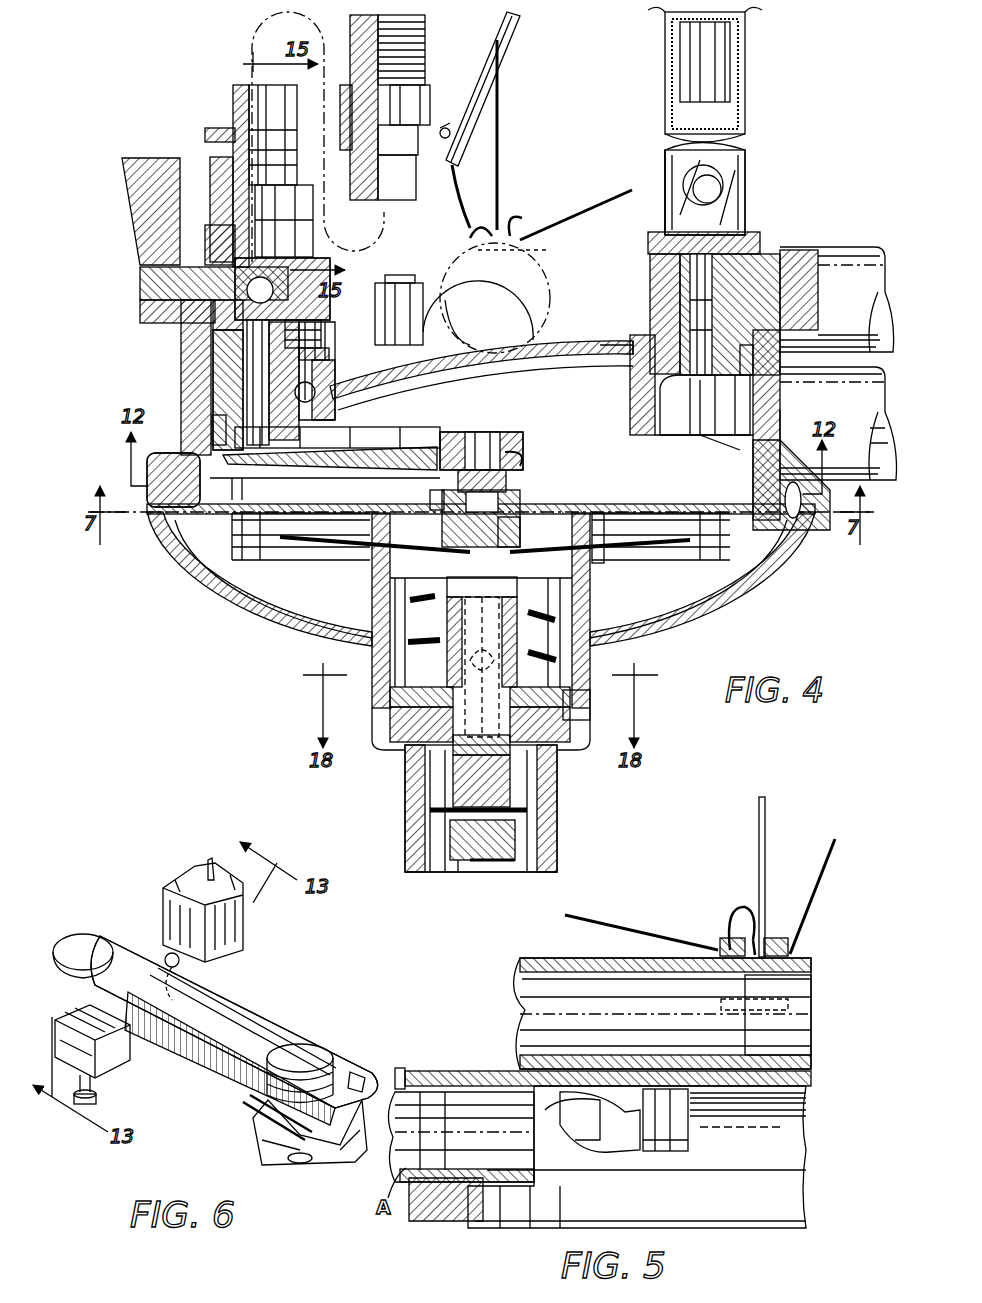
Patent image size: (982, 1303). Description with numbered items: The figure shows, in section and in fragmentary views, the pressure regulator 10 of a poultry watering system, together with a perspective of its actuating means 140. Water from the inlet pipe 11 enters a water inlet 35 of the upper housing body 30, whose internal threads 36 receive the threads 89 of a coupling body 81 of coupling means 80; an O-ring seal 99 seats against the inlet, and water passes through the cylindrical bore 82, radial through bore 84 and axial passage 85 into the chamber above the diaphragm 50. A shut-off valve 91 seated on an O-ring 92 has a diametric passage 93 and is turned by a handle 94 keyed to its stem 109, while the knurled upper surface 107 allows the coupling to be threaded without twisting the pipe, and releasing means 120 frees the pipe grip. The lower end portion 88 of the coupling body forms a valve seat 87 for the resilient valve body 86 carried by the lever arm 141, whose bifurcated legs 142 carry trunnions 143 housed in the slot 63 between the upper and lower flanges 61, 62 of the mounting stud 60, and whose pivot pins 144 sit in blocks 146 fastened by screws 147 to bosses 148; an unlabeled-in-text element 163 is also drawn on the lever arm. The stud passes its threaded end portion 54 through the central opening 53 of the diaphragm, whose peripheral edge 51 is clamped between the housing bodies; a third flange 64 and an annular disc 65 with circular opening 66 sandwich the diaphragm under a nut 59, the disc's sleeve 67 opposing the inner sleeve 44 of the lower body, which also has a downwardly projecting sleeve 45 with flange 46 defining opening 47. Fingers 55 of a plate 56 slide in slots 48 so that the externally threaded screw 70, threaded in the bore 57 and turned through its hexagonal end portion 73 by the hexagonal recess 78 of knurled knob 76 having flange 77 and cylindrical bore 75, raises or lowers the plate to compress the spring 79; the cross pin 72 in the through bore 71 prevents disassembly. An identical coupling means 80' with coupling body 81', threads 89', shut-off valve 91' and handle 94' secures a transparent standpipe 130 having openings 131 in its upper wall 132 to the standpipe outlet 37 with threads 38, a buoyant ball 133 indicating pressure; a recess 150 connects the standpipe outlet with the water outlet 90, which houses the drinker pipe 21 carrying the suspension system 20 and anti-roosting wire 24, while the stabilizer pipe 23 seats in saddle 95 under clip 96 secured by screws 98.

In FIG. 4, the pressure regulator 10 is at (760, 132).
In FIG. 4, the water inlet pipe 11 is at (248, 100).
In FIG. 4, the suspension system 20 is at (514, 55).
In FIG. 5, the suspension system 20 is at (768, 815).
In FIG. 4, the drinker pipe 21 is at (870, 446).
In FIG. 5, the drinker pipe 21 is at (499, 1135).
In FIG. 4, the stabilizer pipe 23 is at (862, 316).
In FIG. 5, the stabilizer pipe 23 is at (604, 1024).
In FIG. 4, the anti-roosting wire 24 is at (562, 214).
In FIG. 5, the anti-roosting wire 24 is at (624, 936).
In FIG. 4, the upper housing body 30 is at (612, 362).
In FIG. 5, the upper housing body 30 is at (820, 1082).
In FIG. 4, the water inlet 35 is at (328, 368).
In FIG. 4, the internal threads 36 is at (227, 390).
In FIG. 4, the standpipe outlet 37 is at (776, 406).
In FIG. 5, the standpipe outlet 37 is at (672, 1148).
In FIG. 4, the internal threads 38 is at (778, 380).
In FIG. 4, the inner upwardly projecting sleeve 44 is at (374, 594).
In FIG. 4, the downwardly projecting annular sleeve 45 is at (385, 742).
In FIG. 4, the radially inwardly directed flange 46 is at (392, 755).
In FIG. 4, the circular opening 47 is at (410, 778).
In FIG. 4, the slots 48 is at (506, 652).
In FIG. 4, the diaphragm 50 is at (576, 508).
In FIG. 4, the peripheral edge 51 is at (798, 522).
In FIG. 4, the central circular opening 53 is at (440, 500).
In FIG. 4, the threaded end portion 54 is at (462, 570).
In FIG. 4, the fingers 55 is at (522, 672).
In FIG. 4, the plate 56 is at (580, 716).
In FIG. 4, the centrally threaded bore 57 is at (481, 745).
In FIG. 4, the nut 59 is at (505, 544).
In FIG. 4, the mounting stud 60 is at (463, 430).
In FIG. 4, the upper peripheral flange 61 is at (504, 434).
In FIG. 4, the lower peripheral flange 62 is at (516, 476).
In FIG. 4, the circumferential slot 63 is at (525, 456).
In FIG. 4, the third flange 64 is at (520, 494).
In FIG. 4, the annular disc 65 is at (655, 556).
In FIG. 4, the circular opening 66 is at (500, 568).
In FIG. 4, the downwardly projecting sleeve 67 is at (385, 560).
In FIG. 4, the externally threaded screw 70 is at (444, 610).
In FIG. 4, the diametric through bore 71 is at (481, 781).
In FIG. 4, the cross pin 72 is at (498, 866).
In FIG. 4, the hexagonal end portion 73 is at (515, 840).
In FIG. 4, the cylindrical bore 75 is at (527, 806).
In FIG. 4, the knurled knob 76 is at (558, 850).
In FIG. 4, the radially outwardly directed flange 77 is at (388, 722).
In FIG. 4, the hexagonal recess 78 is at (458, 872).
In FIG. 4, the spring 79 is at (528, 626).
In FIG. 4, the coupling means 80 is at (307, 285).
In FIG. 4, the coupling means 80' is at (769, 286).
In FIG. 4, the coupling body 81 is at (287, 284).
In FIG. 4, the coupling body 81' is at (717, 227).
In FIG. 4, the cylindrical bore 82 is at (215, 228).
In FIG. 4, the radial through bore 84 is at (182, 324).
In FIG. 4, the axial passage 85 is at (310, 352).
In FIG. 4, the valve body 86 is at (245, 478).
In FIG. 4, the valve seat 87 is at (200, 466).
In FIG. 4, the lower end portion 88 is at (212, 428).
In FIG. 4, the threads 89 is at (228, 375).
In FIG. 4, the threads 89' is at (665, 392).
In FIG. 5, the water outlet 90 is at (470, 1074).
In FIG. 4, the shut-off valve 91 is at (284, 223).
In FIG. 5, the shut-off valve 91 is at (446, 1184).
In FIG. 4, the shut-off valve 91' is at (644, 314).
In FIG. 4, the O-ring 92 is at (321, 326).
In FIG. 4, the diametric passage 93 is at (271, 361).
In FIG. 4, the handle 94 is at (151, 211).
In FIG. 4, the handle 94' is at (816, 290).
In FIG. 4, the saddle 95 is at (428, 280).
In FIG. 5, the saddle 95 is at (766, 1034).
In FIG. 4, the clip 96 is at (542, 254).
In FIG. 5, the clip 96 is at (790, 955).
In FIG. 4, the screws 98 is at (399, 310).
In FIG. 4, the O-ring seal 99 is at (184, 345).
In FIG. 4, the knurled upper exterior surface 107 is at (298, 192).
In FIG. 4, the stem 109 is at (145, 275).
In FIG. 4, the releasing means 120 is at (206, 128).
In FIG. 4, the standpipe 130 is at (748, 80).
In FIG. 4, the openings 131 is at (769, 15).
In FIG. 4, the upper wall 132 is at (642, 19).
In FIG. 4, the buoyant ball 133 is at (718, 180).
In FIG. 4, the actuating means 140 is at (366, 432).
In FIG. 6, the actuating means 140 is at (275, 988).
In FIG. 4, the lever arm 141 is at (390, 460).
In FIG. 6, the lever arm 141 is at (292, 1030).
In FIG. 6, the bifurcated legs 142 is at (357, 1074).
In FIG. 6, the trunnions 143 is at (300, 1073).
In FIG. 6, the pivot pins 144 is at (170, 995).
In FIG. 6, the blocks 146 is at (242, 943).
In FIG. 6, the screws 147 is at (96, 1099).
In FIG. 6, the bosses 148 is at (165, 900).
In FIG. 5, the recess 150 is at (616, 1100).
In FIG. 6, the base 163 is at (350, 1152).